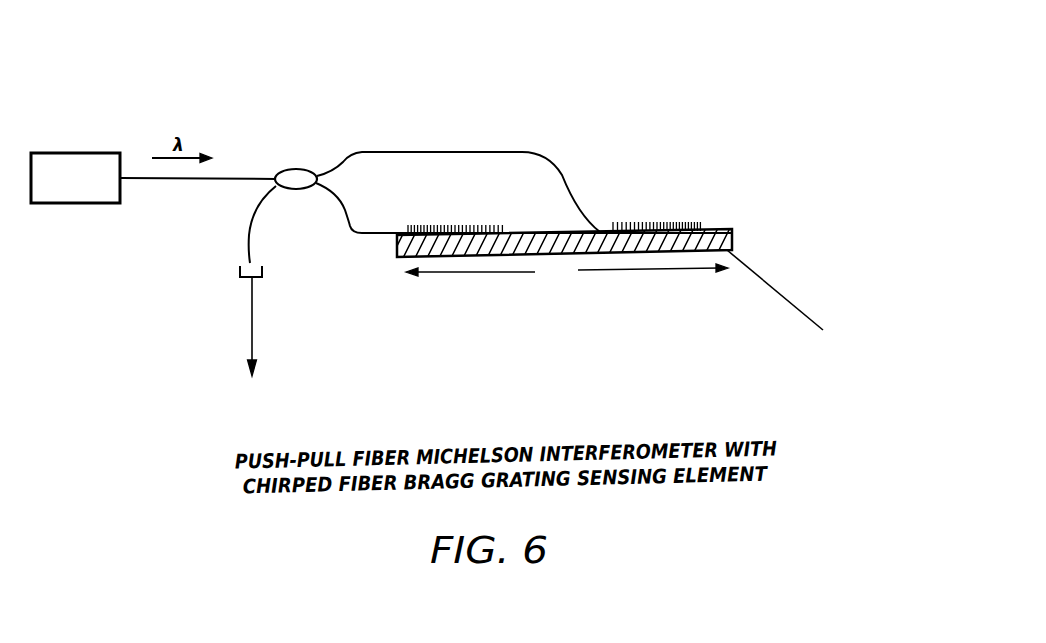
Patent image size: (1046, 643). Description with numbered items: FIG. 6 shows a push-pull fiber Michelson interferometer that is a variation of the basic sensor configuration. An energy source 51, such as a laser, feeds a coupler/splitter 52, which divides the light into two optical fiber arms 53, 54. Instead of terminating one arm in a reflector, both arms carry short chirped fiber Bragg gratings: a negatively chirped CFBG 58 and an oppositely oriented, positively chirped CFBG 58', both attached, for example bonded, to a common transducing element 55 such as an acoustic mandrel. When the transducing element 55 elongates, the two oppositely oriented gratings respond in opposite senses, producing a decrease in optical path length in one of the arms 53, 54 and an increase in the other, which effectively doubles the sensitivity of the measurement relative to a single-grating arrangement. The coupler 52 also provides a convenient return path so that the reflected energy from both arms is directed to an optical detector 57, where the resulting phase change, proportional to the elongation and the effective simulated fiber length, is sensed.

The energy source 51 is at (89, 153).
The coupler/splitter 52 is at (292, 178).
The optical path 53 is at (356, 153).
The optical path 54 is at (350, 212).
The transducing element 55 is at (733, 240).
The optical detector 57 is at (262, 272).
The CFBG 58 is at (500, 141).
The CFBG 58' is at (724, 159).